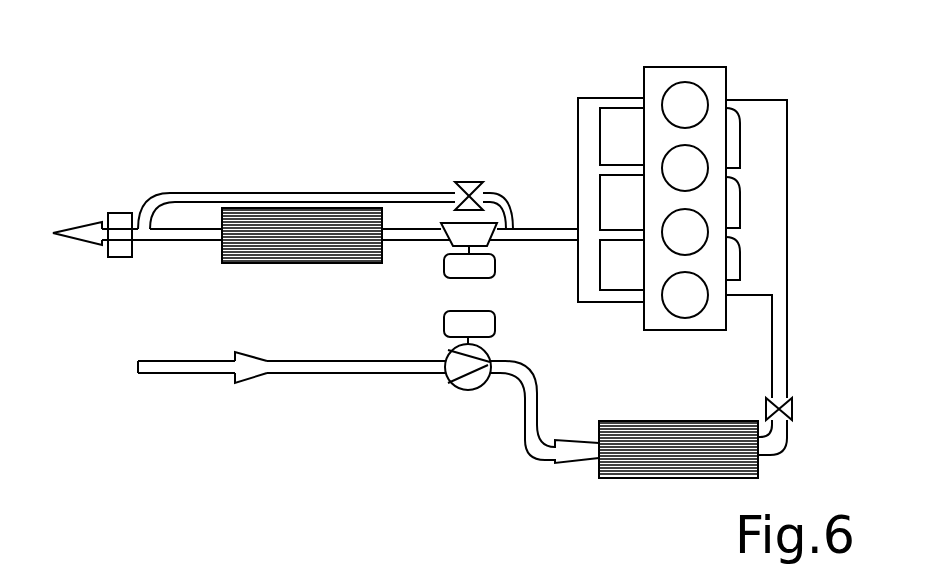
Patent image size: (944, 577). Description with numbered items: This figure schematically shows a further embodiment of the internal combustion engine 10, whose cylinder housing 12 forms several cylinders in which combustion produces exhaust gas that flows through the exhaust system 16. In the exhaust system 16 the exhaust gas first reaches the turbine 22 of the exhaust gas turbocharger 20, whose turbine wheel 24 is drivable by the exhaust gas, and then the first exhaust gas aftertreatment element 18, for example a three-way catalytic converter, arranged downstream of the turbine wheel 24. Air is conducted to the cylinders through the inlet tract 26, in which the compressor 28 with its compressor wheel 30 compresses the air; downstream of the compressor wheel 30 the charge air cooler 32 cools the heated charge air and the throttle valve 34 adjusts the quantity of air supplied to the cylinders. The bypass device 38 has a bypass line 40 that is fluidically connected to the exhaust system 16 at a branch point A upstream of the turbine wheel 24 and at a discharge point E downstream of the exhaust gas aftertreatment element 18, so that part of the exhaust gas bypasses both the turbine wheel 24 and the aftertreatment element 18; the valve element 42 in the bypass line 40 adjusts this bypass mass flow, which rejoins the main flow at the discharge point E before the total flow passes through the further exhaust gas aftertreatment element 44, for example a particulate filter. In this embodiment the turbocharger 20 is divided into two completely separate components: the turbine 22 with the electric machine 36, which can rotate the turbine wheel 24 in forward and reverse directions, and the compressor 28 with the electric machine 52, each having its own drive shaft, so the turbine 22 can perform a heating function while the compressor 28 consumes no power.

The internal combustion engine 10 is at (735, 63).
The cylinder housing 12 is at (653, 83).
The exhaust system 16 is at (140, 180).
The exhaust gas aftertreatment element 18 is at (305, 263).
The exhaust gas turbocharger 20 is at (462, 402).
The turbine 22 is at (512, 195).
The turbine wheel 24 is at (452, 246).
The inlet tract 26 is at (291, 378).
The compressor 28 is at (444, 383).
The compressor wheel 30 is at (480, 390).
The charge air cooler 32 is at (759, 467).
The throttle valve 34 is at (792, 407).
The electric machine 36 is at (499, 268).
The bypass device 38 is at (343, 185).
The bypass line 40 is at (297, 193).
The valve element 42 is at (472, 180).
The further exhaust gas aftertreatment element 44 is at (118, 257).
The electric machine 52 is at (501, 325).
The branch point A is at (517, 230).
The discharge point E is at (153, 245).